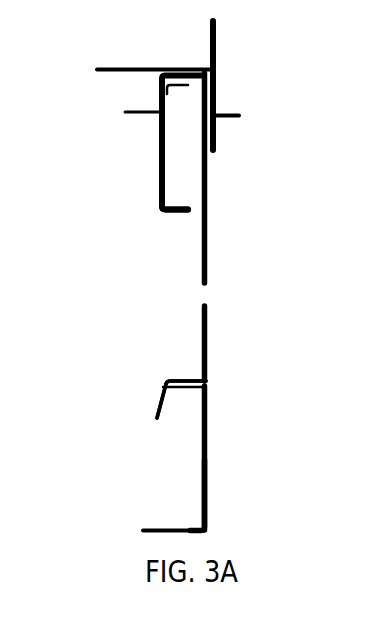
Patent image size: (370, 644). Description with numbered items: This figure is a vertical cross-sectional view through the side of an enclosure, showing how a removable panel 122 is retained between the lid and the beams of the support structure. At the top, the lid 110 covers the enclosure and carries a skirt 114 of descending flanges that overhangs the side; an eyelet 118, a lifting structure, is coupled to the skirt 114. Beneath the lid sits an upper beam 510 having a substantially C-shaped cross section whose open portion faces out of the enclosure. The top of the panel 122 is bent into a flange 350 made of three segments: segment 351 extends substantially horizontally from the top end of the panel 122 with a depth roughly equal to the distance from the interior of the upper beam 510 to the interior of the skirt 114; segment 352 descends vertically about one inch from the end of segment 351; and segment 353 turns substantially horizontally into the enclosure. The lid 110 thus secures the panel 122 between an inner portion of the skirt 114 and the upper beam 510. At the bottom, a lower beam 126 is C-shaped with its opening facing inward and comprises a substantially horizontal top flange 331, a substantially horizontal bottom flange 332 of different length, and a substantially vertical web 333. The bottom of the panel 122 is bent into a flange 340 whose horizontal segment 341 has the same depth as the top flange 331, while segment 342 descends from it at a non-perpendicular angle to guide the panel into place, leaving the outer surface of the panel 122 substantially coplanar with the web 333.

The lid 110 is at (113, 67).
The skirt 114 is at (216, 133).
The eyelet 118 is at (216, 35).
The panel 122 is at (205, 272).
The lower beam 126 is at (207, 447).
The top flange 331 is at (180, 390).
The bottom flange 332 is at (163, 527).
The web 333 is at (207, 485).
The flange 340 is at (140, 375).
The segment 341 is at (193, 378).
The segment 342 is at (155, 404).
The flange 350 is at (128, 82).
The segment 351 is at (177, 67).
The segment 352 is at (160, 93).
The segment 353 is at (137, 115).
The upper beam 510 is at (162, 182).